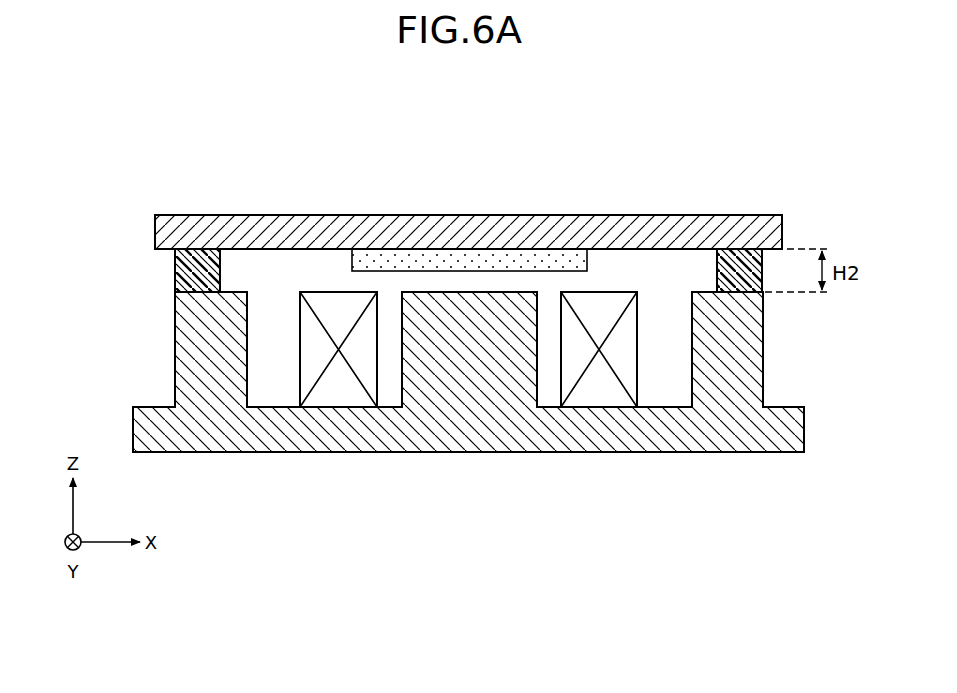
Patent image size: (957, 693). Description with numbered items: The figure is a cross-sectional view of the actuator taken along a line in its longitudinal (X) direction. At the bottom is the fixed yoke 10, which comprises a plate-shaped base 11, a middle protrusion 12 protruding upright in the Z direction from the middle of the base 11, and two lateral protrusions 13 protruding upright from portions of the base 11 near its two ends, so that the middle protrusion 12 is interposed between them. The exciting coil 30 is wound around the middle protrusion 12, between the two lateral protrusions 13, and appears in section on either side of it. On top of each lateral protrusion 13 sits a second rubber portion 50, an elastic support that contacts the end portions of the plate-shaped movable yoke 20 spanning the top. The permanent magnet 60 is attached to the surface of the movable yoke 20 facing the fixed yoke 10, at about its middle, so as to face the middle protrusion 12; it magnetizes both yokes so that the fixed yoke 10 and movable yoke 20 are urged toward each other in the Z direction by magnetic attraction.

The fixed yoke 10 is at (745, 515).
The base 11 is at (593, 437).
The middle protrusion 12 is at (470, 388).
The lateral protrusions 13 is at (210, 388).
The movable yoke 20 is at (408, 228).
The exciting coil 30 is at (345, 322).
The second rubber portions 50 is at (200, 272).
The permanent magnet 60 is at (470, 262).